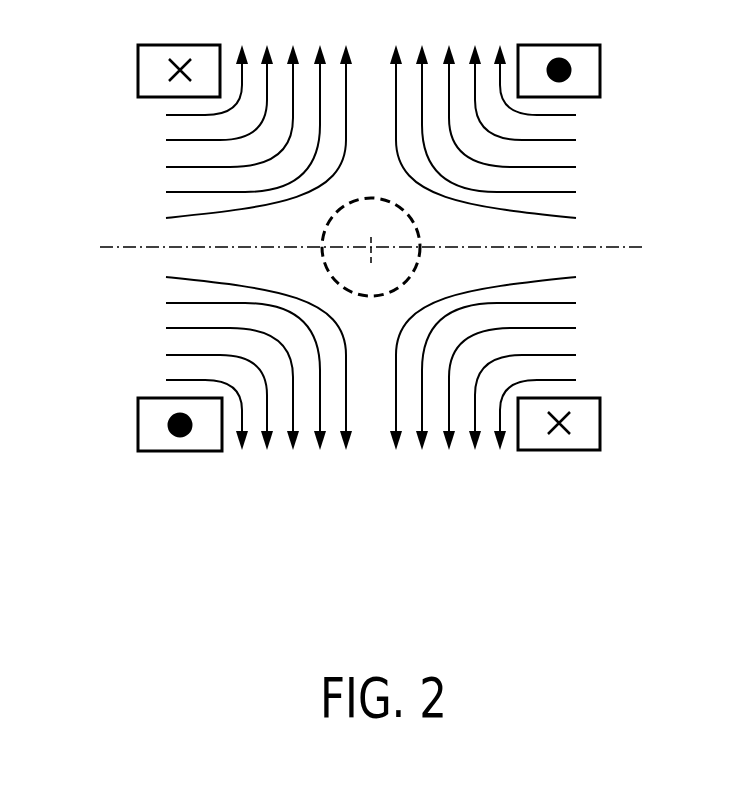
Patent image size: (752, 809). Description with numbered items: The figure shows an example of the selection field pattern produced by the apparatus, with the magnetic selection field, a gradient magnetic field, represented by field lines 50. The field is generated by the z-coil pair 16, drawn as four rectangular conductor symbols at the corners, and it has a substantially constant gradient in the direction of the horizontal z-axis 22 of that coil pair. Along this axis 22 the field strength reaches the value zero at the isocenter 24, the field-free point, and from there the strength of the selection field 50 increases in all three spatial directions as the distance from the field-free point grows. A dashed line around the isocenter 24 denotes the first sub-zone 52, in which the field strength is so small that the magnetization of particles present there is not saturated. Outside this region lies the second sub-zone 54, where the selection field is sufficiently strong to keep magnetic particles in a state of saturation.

The z-coil pair 16 is at (148, 68).
The z-axis 22 is at (618, 248).
The isocenter 24 is at (371, 249).
The field lines 50 is at (175, 166).
The first sub-zone 52 is at (419, 238).
The second sub-zone 54 is at (176, 330).